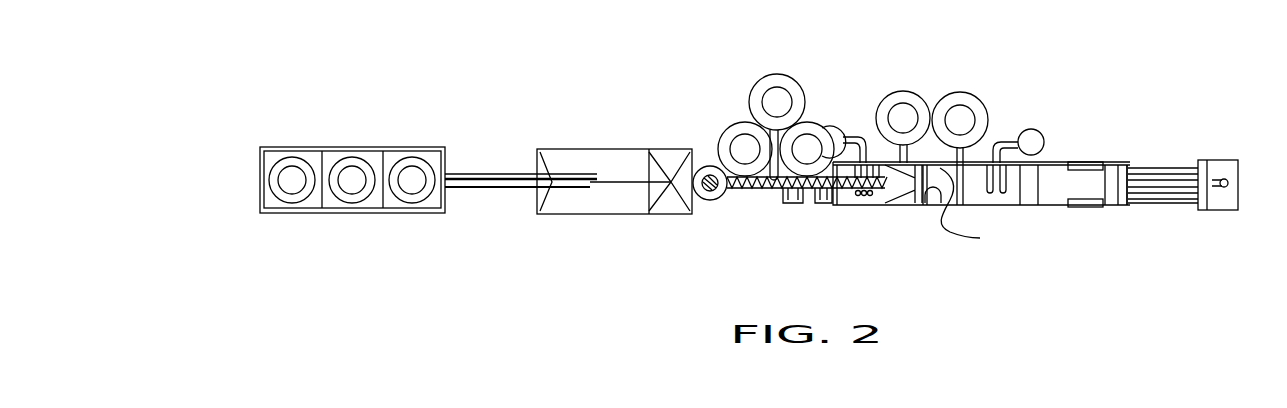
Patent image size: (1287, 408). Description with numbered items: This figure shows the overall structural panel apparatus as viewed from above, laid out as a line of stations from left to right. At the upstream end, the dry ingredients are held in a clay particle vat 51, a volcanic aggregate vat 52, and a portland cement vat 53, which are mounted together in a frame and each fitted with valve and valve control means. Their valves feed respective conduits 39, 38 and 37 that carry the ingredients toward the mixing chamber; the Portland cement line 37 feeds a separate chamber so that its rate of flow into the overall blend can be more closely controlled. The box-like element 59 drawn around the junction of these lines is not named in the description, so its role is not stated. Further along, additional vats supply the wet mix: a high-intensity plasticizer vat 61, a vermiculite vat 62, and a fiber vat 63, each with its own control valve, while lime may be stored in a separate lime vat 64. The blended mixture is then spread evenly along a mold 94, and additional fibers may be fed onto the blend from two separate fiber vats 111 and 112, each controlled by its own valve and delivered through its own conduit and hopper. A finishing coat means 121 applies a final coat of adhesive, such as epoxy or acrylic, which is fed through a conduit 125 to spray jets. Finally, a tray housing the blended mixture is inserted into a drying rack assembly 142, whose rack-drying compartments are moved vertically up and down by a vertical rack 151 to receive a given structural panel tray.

The clay particle vat 51 is at (277, 167).
The volcanic aggregate vat 52 is at (340, 155).
The portland cement vat 53 is at (407, 160).
The conduit 38 is at (480, 173).
The conduit 39 is at (493, 188).
The Portland cement line 37 is at (612, 177).
The guide box 59 is at (607, 203).
The high-intensity plasticizer vat 61 is at (725, 140).
The vermiculite vat 62 is at (762, 88).
The fiber vat 63 is at (810, 127).
The lime vat 64 is at (828, 197).
The mold 94 is at (913, 200).
The fiber vat 111 is at (907, 100).
The fiber vat 112 is at (982, 120).
The conduit 125 is at (1020, 133).
The finishing coat means 121 is at (1047, 146).
The drying rack assembly 142 is at (1202, 160).
The vertical rack 151 is at (1225, 187).